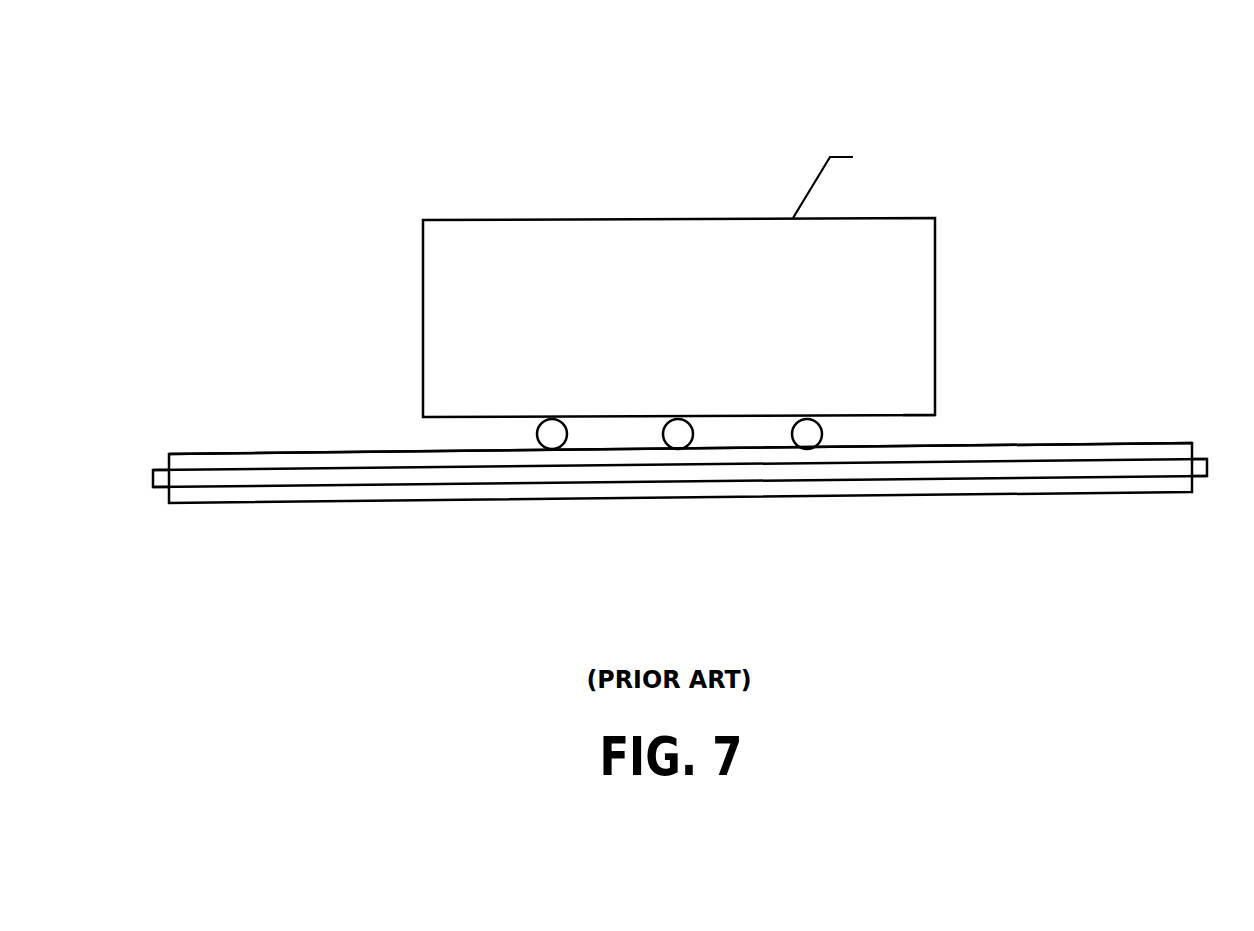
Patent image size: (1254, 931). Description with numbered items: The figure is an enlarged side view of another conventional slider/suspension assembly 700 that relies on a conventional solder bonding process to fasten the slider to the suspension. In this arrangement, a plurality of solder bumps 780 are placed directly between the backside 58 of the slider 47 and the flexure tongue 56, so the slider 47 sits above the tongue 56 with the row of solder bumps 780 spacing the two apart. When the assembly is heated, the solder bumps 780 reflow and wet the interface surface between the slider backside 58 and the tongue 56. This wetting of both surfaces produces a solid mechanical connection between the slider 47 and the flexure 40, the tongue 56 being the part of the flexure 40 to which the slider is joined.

The slider/suspension assembly 700 is at (694, 88).
The slider 47 is at (651, 322).
The solder bumps 780 is at (522, 433).
The backside 58 is at (956, 430).
The flexure 40 is at (680, 504).
The flexure tongue 56 is at (671, 432).